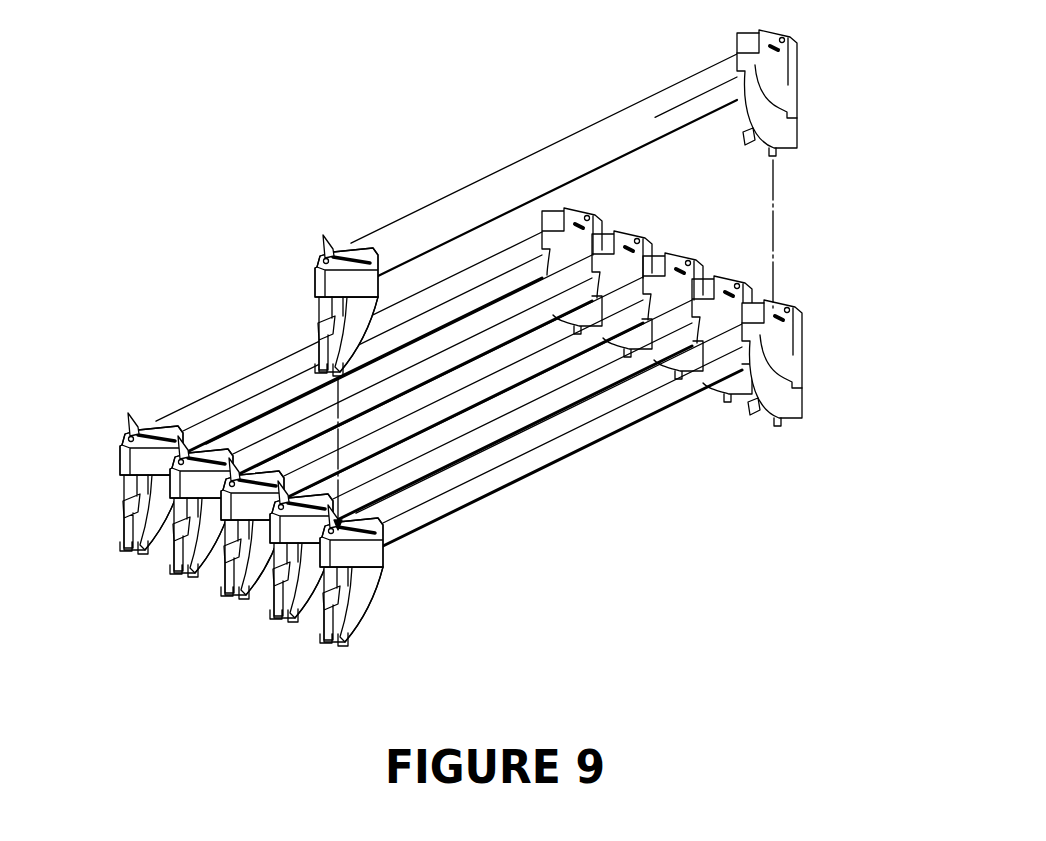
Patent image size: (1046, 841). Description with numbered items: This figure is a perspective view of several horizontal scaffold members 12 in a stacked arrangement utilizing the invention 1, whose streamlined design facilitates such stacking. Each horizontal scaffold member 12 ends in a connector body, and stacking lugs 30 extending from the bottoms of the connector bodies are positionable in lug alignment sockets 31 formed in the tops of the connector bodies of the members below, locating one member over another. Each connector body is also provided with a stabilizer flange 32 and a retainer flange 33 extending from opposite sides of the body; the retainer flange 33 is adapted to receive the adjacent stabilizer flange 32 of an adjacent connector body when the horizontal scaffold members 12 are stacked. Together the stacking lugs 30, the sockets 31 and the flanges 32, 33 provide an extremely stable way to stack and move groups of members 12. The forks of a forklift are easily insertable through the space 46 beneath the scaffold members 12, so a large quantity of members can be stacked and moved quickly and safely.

The invention 1 is at (474, 345).
The horizontal scaffold member 12 is at (553, 162).
The stacking lug 30 is at (777, 160).
The lug alignment socket 31 is at (332, 257).
The stabilizer flange 32 is at (134, 412).
The retainer flange 33 is at (360, 552).
The space 46 is at (474, 345).